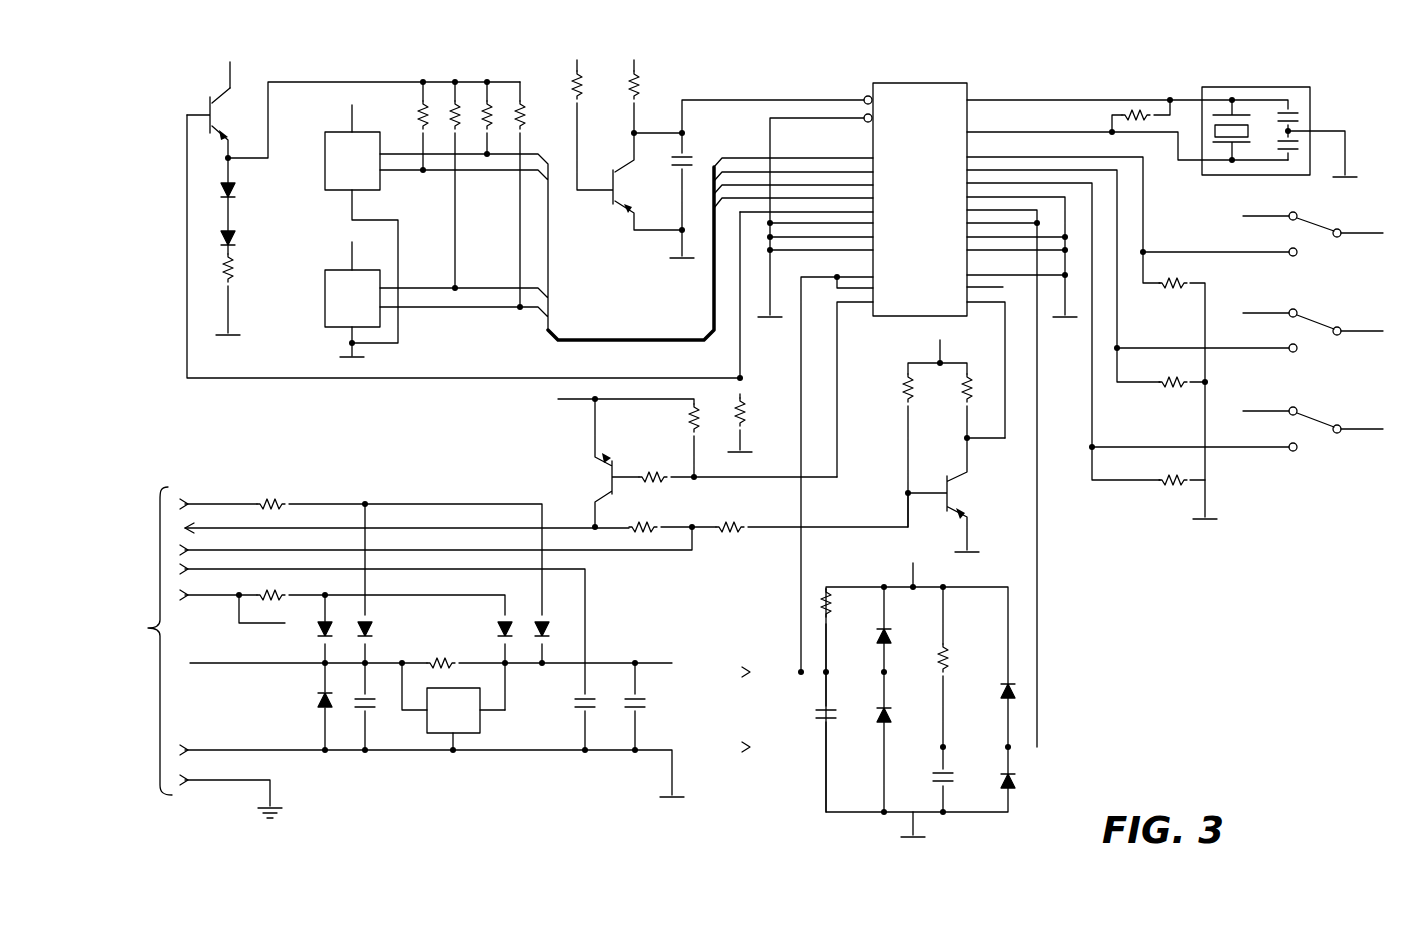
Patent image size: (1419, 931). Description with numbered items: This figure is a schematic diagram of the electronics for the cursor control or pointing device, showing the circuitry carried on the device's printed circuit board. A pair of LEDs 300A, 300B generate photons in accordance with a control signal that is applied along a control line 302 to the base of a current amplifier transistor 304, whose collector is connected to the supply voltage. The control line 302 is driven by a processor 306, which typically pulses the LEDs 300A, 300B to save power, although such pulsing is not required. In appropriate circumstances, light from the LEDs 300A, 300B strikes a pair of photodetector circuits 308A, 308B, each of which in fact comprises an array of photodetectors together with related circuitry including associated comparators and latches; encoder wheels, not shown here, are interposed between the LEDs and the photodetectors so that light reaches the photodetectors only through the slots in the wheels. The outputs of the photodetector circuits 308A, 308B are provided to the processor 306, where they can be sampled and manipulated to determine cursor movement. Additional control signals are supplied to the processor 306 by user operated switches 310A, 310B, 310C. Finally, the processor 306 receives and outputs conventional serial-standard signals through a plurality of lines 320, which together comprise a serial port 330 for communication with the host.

The control line 302 is at (194, 115).
The current amplifier transistor 304 is at (240, 92).
The LED 300A is at (236, 189).
The LED 300B is at (236, 236).
The photodetector circuit 308A is at (372, 132).
The photodetector circuit 308B is at (324, 306).
The processor 306 is at (903, 83).
The user operated switch 310A is at (1319, 223).
The user operated switch 310B is at (1317, 320).
The user operated switch 310C is at (1317, 420).
The lines 320 is at (220, 595).
The serial port 330 is at (131, 641).